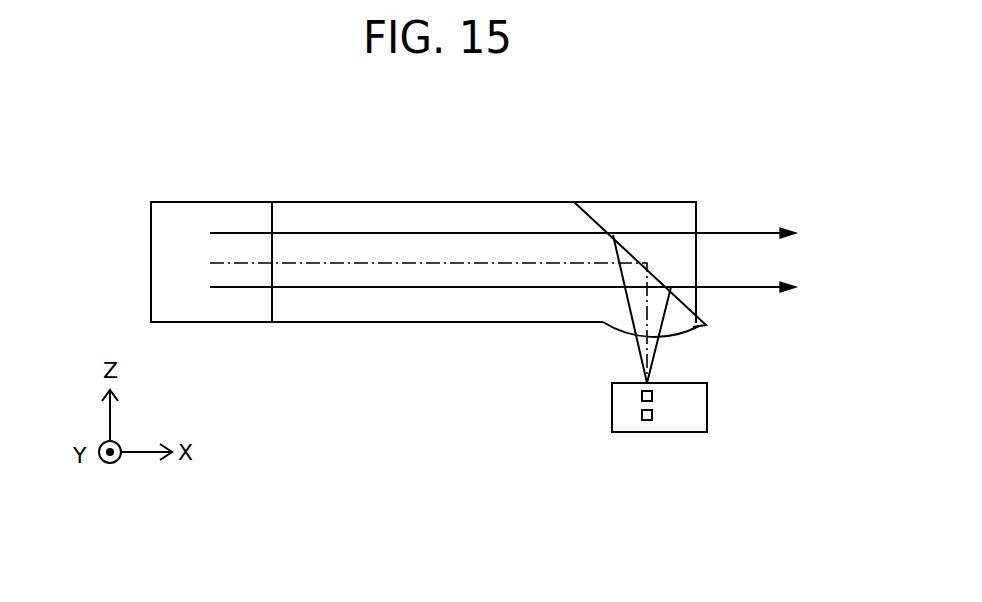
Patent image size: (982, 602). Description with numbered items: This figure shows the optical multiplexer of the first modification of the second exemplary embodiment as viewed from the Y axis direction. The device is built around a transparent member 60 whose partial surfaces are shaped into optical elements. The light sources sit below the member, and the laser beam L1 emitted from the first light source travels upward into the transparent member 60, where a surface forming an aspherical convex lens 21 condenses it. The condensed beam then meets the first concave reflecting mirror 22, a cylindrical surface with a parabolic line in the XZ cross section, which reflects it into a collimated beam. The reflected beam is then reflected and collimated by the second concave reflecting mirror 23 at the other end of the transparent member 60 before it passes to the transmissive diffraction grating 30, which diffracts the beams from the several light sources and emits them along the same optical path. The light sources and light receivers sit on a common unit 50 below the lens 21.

The second concave reflecting mirror 23 is at (183, 213).
The transparent member 60 is at (380, 200).
The first concave reflecting mirror 22 is at (598, 213).
The lens 21 is at (678, 337).
The transmissive diffraction grating 30 is at (698, 213).
The laser beam L1 is at (437, 266).
The substrate 50 is at (612, 403).